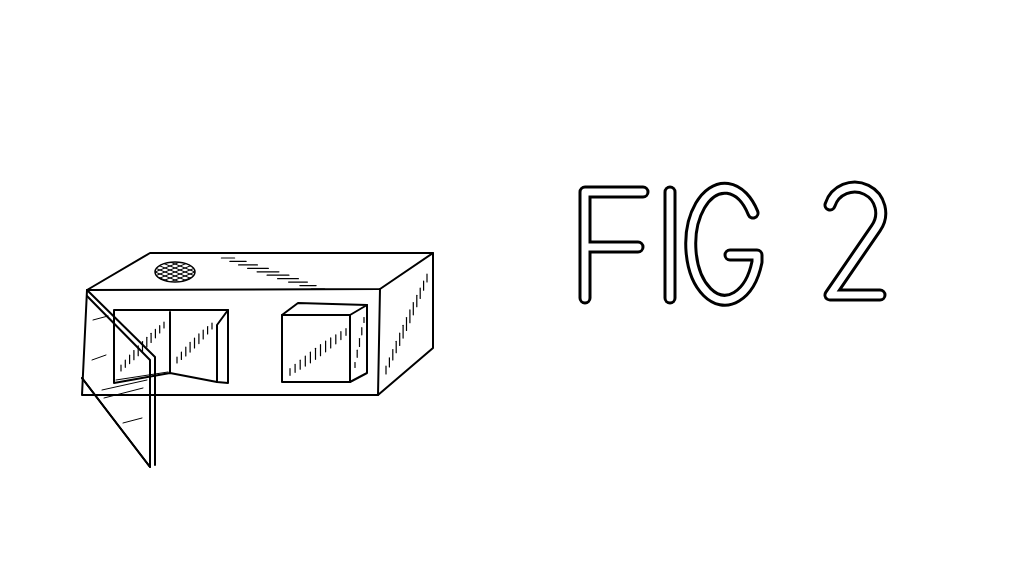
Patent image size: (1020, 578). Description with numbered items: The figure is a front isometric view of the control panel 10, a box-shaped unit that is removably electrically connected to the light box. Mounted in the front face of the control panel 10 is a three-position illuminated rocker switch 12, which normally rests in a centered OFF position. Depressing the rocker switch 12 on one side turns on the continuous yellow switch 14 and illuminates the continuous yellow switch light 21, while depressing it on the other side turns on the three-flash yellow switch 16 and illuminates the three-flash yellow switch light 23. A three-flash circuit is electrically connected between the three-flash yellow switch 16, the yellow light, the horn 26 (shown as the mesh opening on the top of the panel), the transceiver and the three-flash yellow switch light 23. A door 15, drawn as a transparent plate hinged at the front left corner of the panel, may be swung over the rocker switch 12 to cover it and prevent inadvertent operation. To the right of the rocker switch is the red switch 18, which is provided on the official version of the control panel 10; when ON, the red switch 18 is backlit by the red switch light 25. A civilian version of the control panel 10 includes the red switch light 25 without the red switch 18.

The control panel 10 is at (382, 133).
The three-position illuminated rocker switch 12 is at (200, 307).
The continuous yellow switch 14 is at (133, 312).
The door 15 is at (115, 428).
The three-flash yellow switch 16 is at (212, 308).
The red switch 18 is at (328, 307).
The continuous yellow switch light 21 is at (150, 344).
The three-flash yellow switch light 23 is at (190, 347).
The red switch light 25 is at (318, 347).
The horn 26 is at (173, 262).